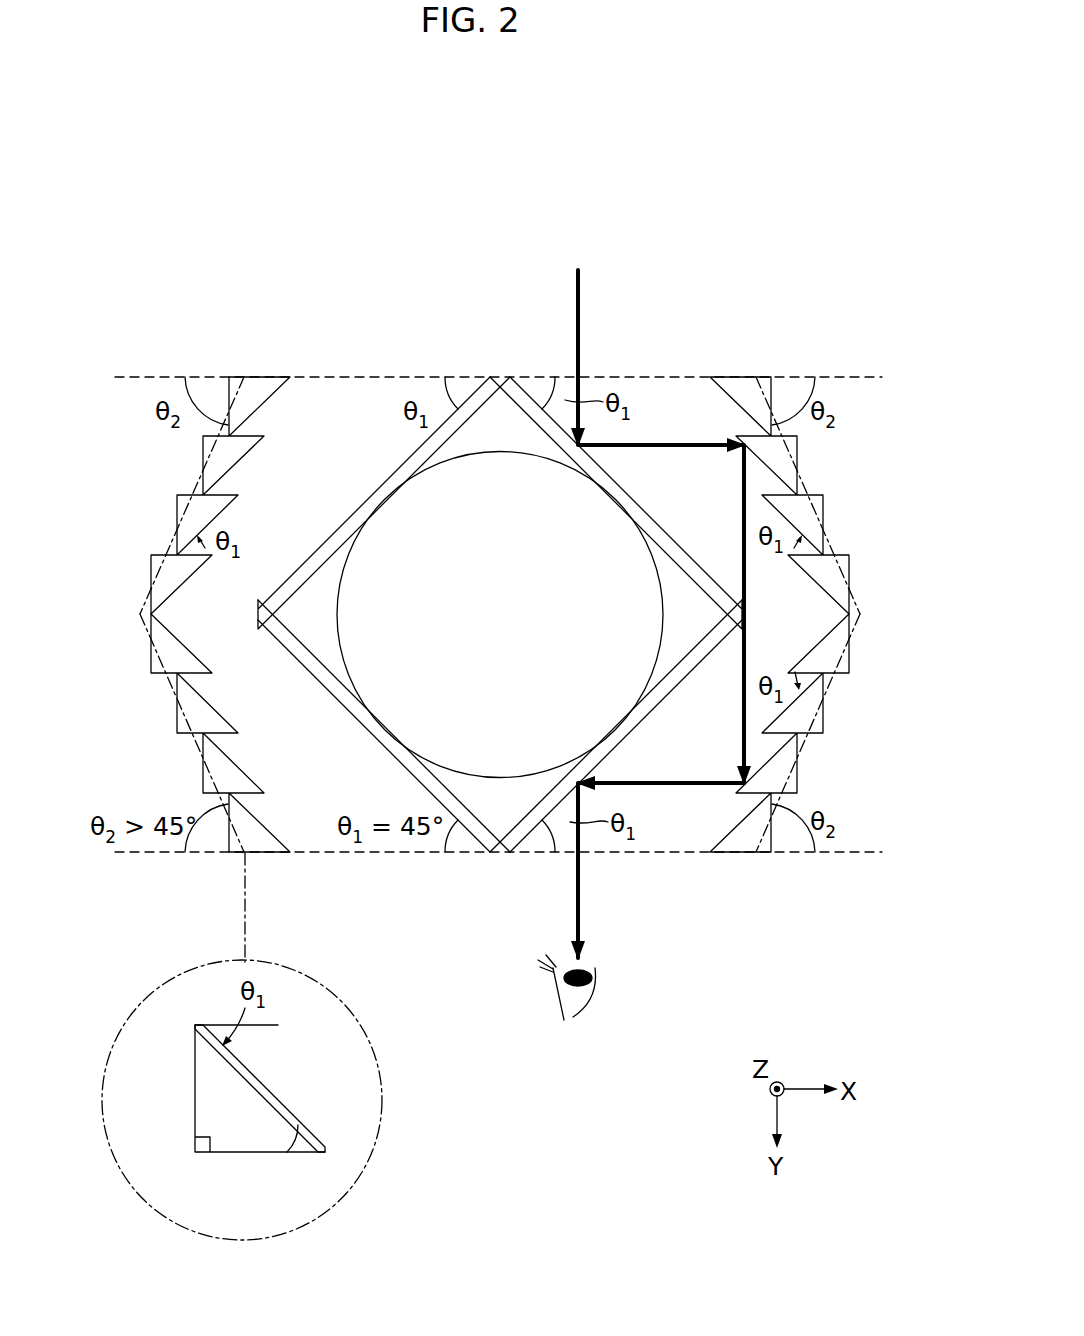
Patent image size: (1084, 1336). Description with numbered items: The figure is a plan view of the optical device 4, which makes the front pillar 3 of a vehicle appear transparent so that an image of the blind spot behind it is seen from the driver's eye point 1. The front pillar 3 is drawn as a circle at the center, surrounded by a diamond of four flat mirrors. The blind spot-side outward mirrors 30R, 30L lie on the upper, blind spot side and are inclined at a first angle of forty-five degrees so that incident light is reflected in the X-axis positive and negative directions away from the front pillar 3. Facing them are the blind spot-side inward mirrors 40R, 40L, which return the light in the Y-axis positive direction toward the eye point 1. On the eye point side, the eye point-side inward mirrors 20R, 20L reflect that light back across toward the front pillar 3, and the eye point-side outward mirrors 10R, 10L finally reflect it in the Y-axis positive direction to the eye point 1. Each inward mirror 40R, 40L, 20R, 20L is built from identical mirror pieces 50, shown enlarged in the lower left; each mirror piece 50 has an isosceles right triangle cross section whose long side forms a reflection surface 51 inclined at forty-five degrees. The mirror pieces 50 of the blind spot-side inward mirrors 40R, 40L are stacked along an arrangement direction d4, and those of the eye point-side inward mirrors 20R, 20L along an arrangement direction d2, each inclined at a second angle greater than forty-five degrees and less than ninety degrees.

The eye point 1 is at (592, 1002).
The front pillar 3 is at (508, 628).
The optical device 4 is at (712, 263).
The eye point-side outward mirror 10L is at (467, 825).
The eye point-side outward mirror 10R is at (533, 825).
The eye point-side inward mirror 20L is at (262, 829).
The eye point-side inward mirror 20R is at (738, 829).
The blind spot-side outward mirror 30L is at (467, 405).
The blind spot-side outward mirror 30R is at (533, 405).
The blind spot-side inward mirror 40L is at (262, 401).
The blind spot-side inward mirror 40R is at (738, 401).
The mirror piece 50 is at (250, 1058).
The reflection surface 51 is at (268, 1093).
The arrangement direction d2 is at (195, 753).
The arrangement direction d4 is at (195, 470).